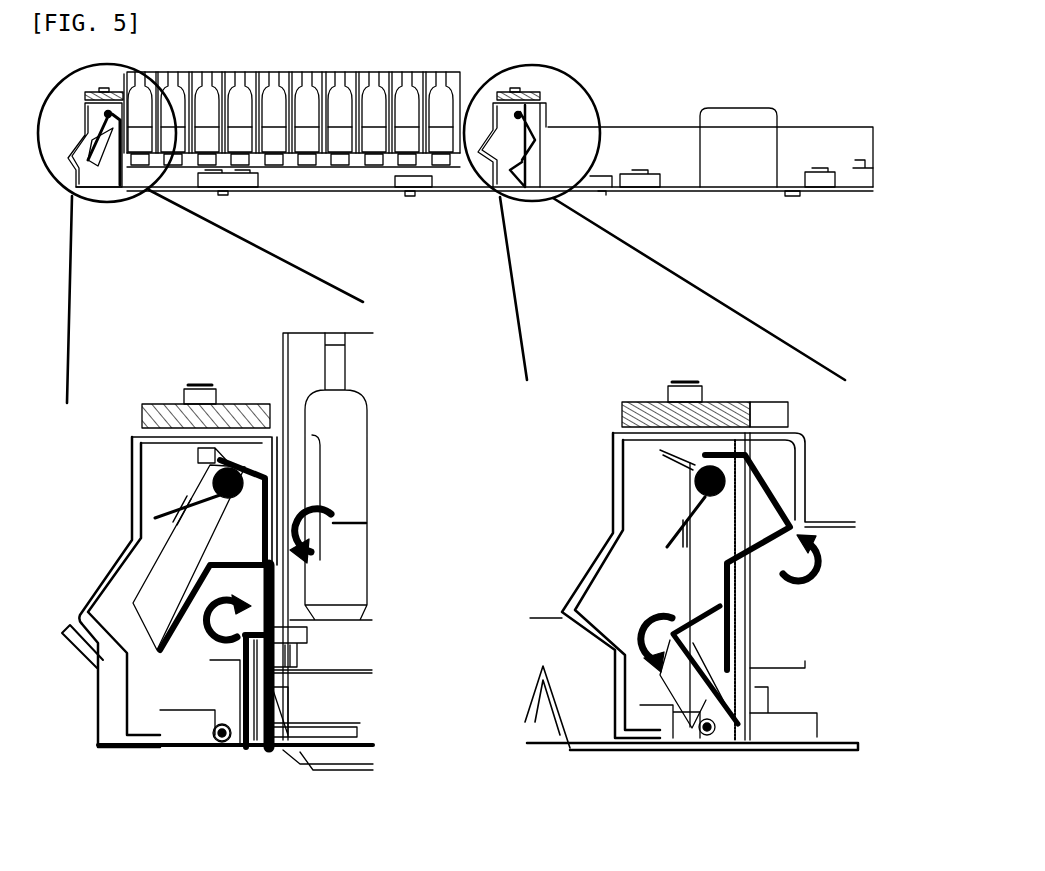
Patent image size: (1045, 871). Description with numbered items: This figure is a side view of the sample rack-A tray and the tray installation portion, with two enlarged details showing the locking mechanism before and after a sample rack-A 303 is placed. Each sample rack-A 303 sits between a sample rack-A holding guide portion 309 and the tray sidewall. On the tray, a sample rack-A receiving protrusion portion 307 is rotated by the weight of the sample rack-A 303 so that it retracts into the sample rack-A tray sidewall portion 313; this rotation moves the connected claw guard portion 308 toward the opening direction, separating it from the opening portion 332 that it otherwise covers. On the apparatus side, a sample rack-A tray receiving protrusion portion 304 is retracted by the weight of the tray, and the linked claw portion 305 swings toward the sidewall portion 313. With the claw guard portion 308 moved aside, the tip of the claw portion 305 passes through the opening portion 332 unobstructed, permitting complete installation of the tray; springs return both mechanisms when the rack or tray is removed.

The sample rack-A 303 is at (335, 333).
The sample rack-A tray receiving protrusion portion 304 is at (775, 705).
The claw portion 305 is at (727, 592).
The sample rack-A receiving protrusion portion 307 is at (277, 507).
The claw guard portion 308 is at (138, 613).
The sample rack-A holding guide portion 309 is at (162, 412).
The sample rack-A tray sidewall portion 313 is at (135, 607).
The opening portion 332 is at (138, 613).